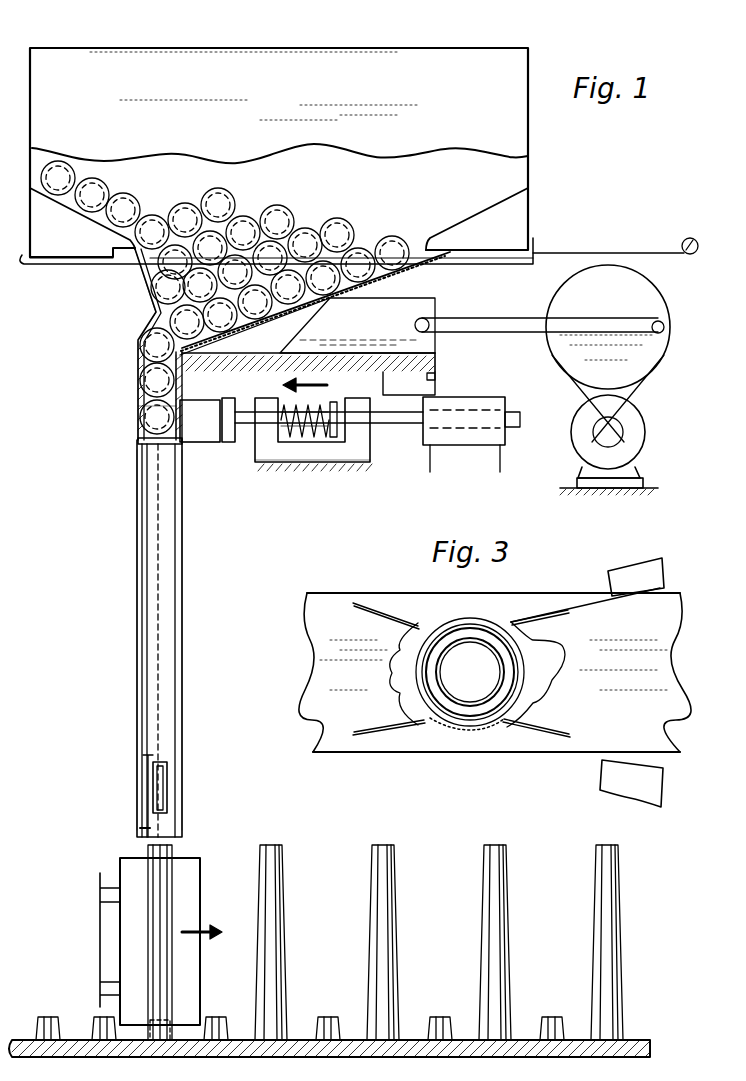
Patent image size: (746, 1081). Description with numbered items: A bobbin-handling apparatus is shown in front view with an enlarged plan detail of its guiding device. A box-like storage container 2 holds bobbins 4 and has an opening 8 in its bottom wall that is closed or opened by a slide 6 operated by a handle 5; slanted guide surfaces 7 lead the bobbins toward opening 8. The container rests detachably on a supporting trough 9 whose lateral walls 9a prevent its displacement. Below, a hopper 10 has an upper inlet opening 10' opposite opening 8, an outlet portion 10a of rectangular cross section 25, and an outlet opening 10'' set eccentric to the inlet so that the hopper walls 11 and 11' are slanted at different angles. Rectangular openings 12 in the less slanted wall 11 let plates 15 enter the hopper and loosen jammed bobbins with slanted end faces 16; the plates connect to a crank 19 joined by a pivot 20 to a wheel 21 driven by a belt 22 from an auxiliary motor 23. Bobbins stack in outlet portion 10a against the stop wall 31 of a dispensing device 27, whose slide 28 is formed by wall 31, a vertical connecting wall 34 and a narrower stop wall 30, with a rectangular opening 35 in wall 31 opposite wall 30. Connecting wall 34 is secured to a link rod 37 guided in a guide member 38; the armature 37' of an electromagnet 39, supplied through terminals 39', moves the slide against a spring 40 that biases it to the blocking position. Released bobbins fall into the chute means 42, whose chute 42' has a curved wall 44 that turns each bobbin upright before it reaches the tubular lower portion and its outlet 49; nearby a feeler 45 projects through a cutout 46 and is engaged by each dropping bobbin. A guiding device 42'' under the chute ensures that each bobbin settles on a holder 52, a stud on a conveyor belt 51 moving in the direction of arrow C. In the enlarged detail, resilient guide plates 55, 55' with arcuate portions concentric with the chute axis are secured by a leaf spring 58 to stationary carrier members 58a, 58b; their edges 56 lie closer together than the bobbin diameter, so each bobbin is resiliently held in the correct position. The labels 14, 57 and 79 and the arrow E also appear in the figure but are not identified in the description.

In FIG. 1, the storage container 2 is at (400, 68).
In FIG. 1, the bobbin 4 is at (338, 230).
In FIG. 3, the bobbin 4 is at (516, 669).
In FIG. 1, the handle 5 is at (684, 240).
In FIG. 1, the slide 6 is at (613, 253).
In FIG. 1, the slanted guide surfaces 7 is at (82, 213).
In FIG. 1, the opening 8 is at (413, 250).
In FIG. 1, the supporting trough 9 is at (105, 262).
In FIG. 1, the lateral walls 9a is at (22, 266).
In FIG. 1, the hopper 10 is at (304, 344).
In FIG. 1, the upper inlet opening 10' is at (131, 284).
In FIG. 1, the outlet opening 10'' is at (120, 391).
In FIG. 1, the outlet portion 10a is at (140, 425).
In FIG. 1, the guide wall 11 is at (315, 303).
In FIG. 1, the hopper wall 11' is at (113, 339).
In FIG. 1, the rectangular openings 12 is at (240, 340).
In FIG. 1, the drive unit 14 is at (552, 442).
In FIG. 1, the plates 15 is at (438, 348).
In FIG. 1, the slanted end faces 16 is at (298, 330).
In FIG. 1, the crank 19 is at (507, 333).
In FIG. 1, the pivot 20 is at (655, 333).
In FIG. 1, the wheel 21 is at (562, 343).
In FIG. 1, the belt 22 is at (650, 395).
In FIG. 1, the auxiliary motor 23 is at (635, 445).
In FIG. 1, the rectangular cross section 25 is at (138, 402).
In FIG. 1, the dispensing device 27 is at (288, 510).
In FIG. 1, the dispensing slide 28 is at (228, 450).
In FIG. 1, the narrower stop wall 30 is at (190, 400).
In FIG. 1, the stop wall 31 is at (138, 442).
In FIG. 1, the connecting wall 34 is at (240, 433).
In FIG. 1, the rectangular opening 35 is at (210, 445).
In FIG. 1, the link rod 37 is at (235, 404).
In FIG. 1, the armature 37' is at (529, 401).
In FIG. 1, the guide member 38 is at (313, 453).
In FIG. 1, the electromagnet 39 is at (451, 451).
In FIG. 1, the terminals 39' is at (465, 477).
In FIG. 1, the spring 40 is at (333, 440).
In FIG. 1, the chute means 42 is at (95, 640).
In FIG. 1, the chute 42' is at (210, 640).
In FIG. 1, the guiding device 42'' is at (88, 940).
In FIG. 1, the curved wall 44 is at (155, 530).
In FIG. 1, the feeler 45 is at (163, 781).
In FIG. 1, the cutout 46 is at (148, 756).
In FIG. 1, the outlet 49 is at (145, 827).
In FIG. 1, the belt 51 is at (300, 1045).
In FIG. 3, the belt 51 is at (330, 605).
In FIG. 1, the holder 52 is at (160, 1020).
In FIG. 3, the holder 52 is at (488, 680).
In FIG. 1, the resilient guide plate 55 is at (186, 941).
In FIG. 3, the resilient guide plate 55 is at (461, 647).
In FIG. 3, the resilient guide plate 55' is at (461, 752).
In FIG. 3, the edges 56 is at (393, 676).
In FIG. 3, the bottom flange 57 is at (437, 730).
In FIG. 3, the leaf spring 58 is at (585, 598).
In FIG. 3, the stationary carrier member 58a is at (625, 578).
In FIG. 3, the stationary carrier member 58b is at (622, 768).
In FIG. 1, the bracket 79 is at (384, 378).
In FIG. 1, the direction arrow E is at (292, 386).
In FIG. 1, the arrow C is at (212, 933).